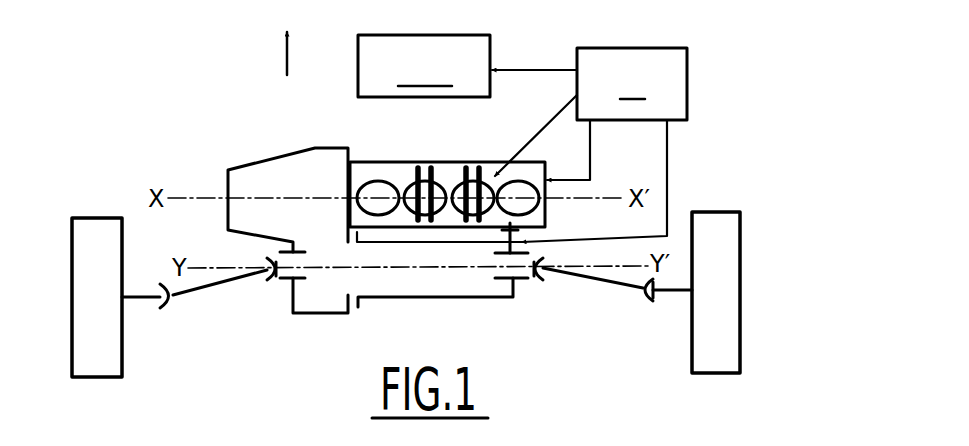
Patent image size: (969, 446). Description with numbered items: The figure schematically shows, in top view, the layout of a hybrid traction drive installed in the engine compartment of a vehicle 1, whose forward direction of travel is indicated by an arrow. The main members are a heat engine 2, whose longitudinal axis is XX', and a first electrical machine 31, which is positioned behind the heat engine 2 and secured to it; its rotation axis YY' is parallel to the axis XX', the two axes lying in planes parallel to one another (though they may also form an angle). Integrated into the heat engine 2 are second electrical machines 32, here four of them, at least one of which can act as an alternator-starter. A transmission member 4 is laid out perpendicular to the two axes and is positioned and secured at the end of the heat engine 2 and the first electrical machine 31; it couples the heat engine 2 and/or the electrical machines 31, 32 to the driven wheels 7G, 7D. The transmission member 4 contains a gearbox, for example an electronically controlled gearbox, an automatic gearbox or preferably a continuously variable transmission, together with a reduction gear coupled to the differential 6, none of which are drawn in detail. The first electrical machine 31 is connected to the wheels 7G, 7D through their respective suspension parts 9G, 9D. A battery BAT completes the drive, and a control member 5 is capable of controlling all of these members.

The vehicle 1 is at (152, 122).
The battery BAT is at (424, 66).
The control member 5 is at (589, 145).
The transmission member 4 is at (270, 153).
The heat engine 2 is at (456, 160).
The second electrical machine 32 is at (414, 185).
The first electrical machine 31 is at (467, 303).
The differential 6 is at (312, 294).
The left wheel 7G is at (82, 329).
The right wheel 7D is at (740, 328).
The suspension part 9G is at (200, 292).
The suspension part 9D is at (623, 290).